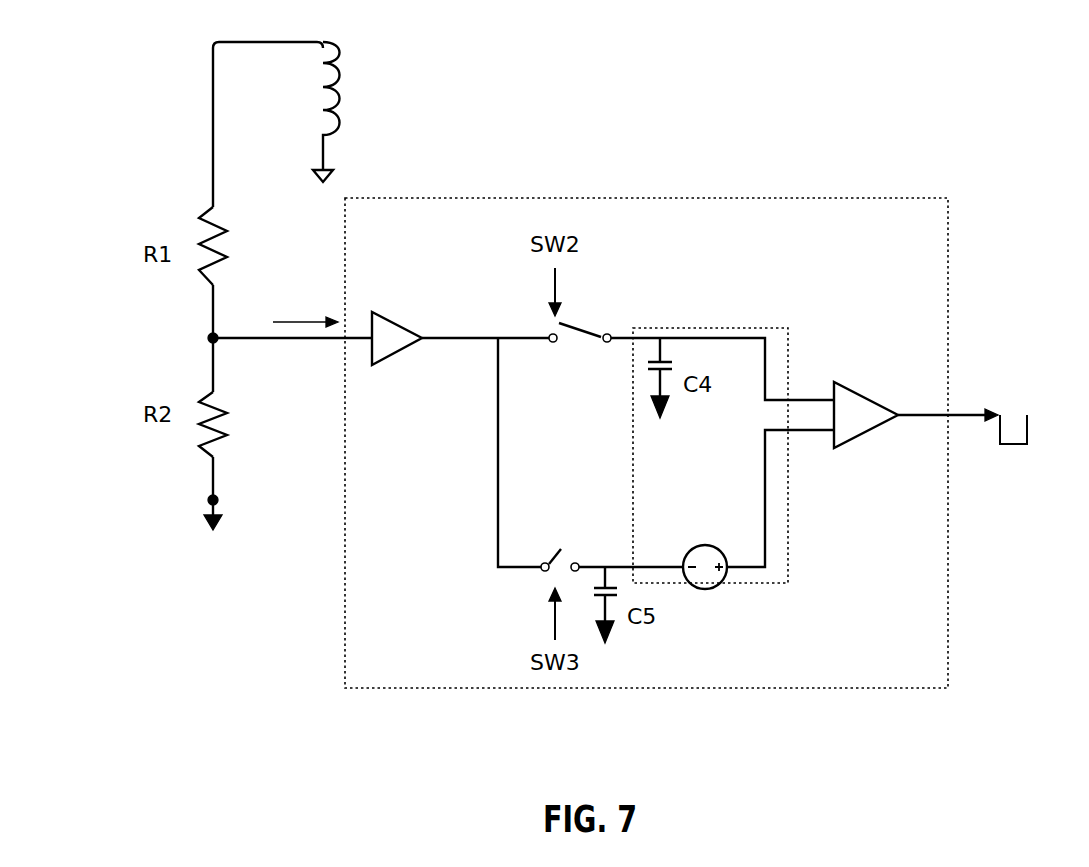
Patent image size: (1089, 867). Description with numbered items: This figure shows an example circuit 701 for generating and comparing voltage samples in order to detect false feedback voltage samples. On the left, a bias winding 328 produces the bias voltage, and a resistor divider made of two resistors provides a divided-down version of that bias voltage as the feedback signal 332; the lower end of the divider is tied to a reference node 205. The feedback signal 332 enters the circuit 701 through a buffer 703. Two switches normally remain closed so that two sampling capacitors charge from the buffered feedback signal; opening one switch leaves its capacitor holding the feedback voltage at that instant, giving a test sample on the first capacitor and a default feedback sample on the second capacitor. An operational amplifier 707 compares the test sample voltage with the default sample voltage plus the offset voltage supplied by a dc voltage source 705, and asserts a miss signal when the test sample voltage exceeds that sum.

The bias winding 328 is at (335, 105).
The feedback signal U_FB 332 is at (305, 293).
The ground reference 205 is at (218, 512).
The circuit 701 is at (948, 240).
The buffer 703 is at (395, 322).
The dc voltage source 705 is at (725, 581).
The operational amplifier 707 is at (860, 395).